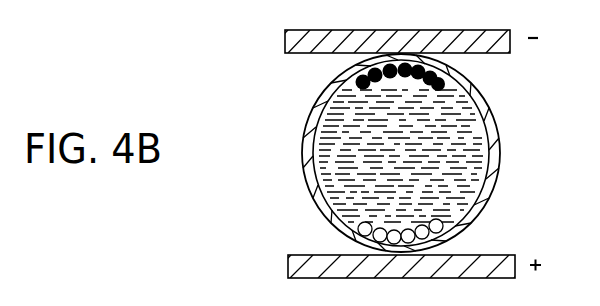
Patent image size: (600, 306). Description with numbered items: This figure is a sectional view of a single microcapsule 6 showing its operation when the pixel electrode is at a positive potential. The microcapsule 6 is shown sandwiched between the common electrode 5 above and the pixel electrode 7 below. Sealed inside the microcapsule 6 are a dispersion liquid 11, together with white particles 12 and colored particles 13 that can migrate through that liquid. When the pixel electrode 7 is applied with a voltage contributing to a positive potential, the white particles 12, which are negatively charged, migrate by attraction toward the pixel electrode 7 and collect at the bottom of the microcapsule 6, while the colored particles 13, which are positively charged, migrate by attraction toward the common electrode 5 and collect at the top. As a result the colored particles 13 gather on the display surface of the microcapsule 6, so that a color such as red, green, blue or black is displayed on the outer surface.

The common electrode 5 is at (300, 40).
The pixel electrode 7 is at (297, 265).
The dispersion liquid 11 is at (306, 162).
The microcapsule 6 is at (495, 137).
The colored particles 13 is at (348, 92).
The white particles 12 is at (434, 222).